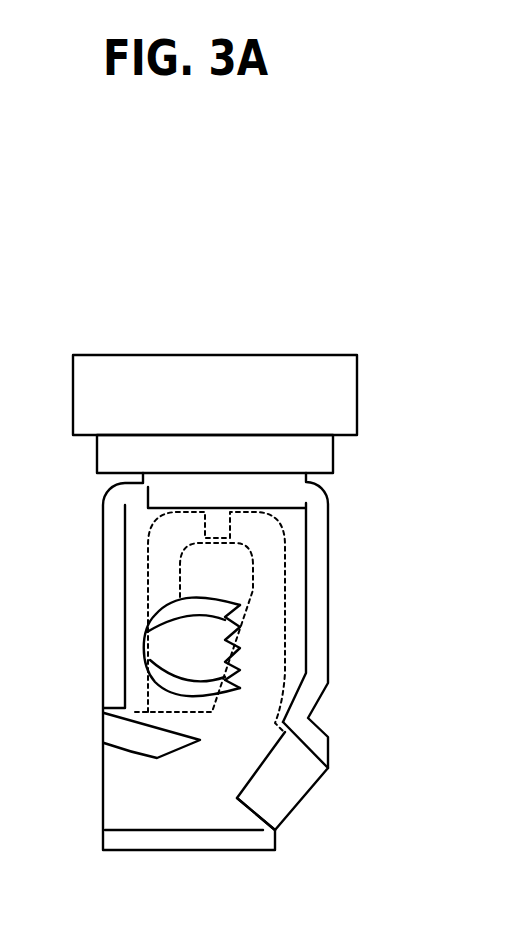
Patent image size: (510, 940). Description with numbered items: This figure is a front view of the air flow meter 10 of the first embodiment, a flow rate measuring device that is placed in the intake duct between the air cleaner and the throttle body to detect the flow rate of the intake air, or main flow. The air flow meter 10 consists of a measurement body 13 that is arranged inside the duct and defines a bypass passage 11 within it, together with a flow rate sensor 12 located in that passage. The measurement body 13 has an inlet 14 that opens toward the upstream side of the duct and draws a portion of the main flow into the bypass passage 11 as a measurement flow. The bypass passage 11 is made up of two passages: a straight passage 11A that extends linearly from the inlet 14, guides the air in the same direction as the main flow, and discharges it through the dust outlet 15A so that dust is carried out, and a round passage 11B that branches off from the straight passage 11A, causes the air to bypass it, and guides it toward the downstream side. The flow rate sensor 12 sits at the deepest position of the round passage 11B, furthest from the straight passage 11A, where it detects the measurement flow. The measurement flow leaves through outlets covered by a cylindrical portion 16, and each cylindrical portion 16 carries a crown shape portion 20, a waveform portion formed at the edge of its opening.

The air flow meter 10 is at (241, 585).
The bypass passage 11 is at (351, 666).
The straight passage 11A is at (328, 776).
The round passage 11B is at (268, 662).
The flow rate sensor 12 is at (218, 522).
The measurement body 13 is at (104, 547).
The inlet 14 is at (104, 782).
The dust outlet 15A is at (298, 807).
The cylindrical portion 16 is at (168, 693).
The crown shape portion 20 is at (237, 690).